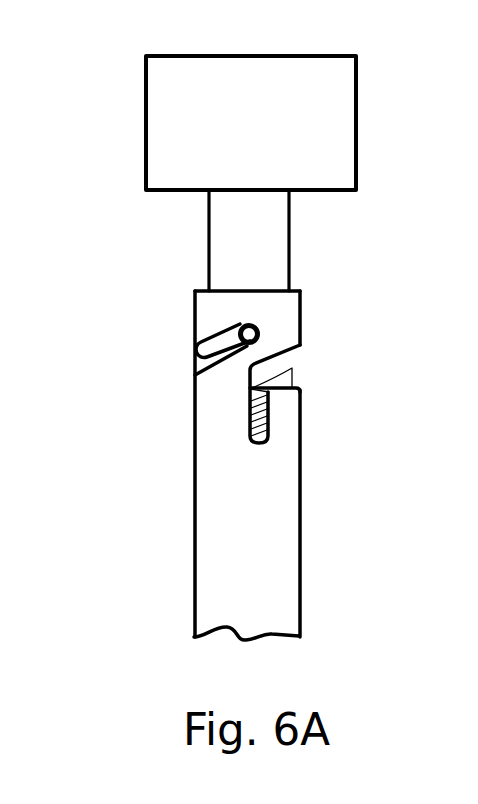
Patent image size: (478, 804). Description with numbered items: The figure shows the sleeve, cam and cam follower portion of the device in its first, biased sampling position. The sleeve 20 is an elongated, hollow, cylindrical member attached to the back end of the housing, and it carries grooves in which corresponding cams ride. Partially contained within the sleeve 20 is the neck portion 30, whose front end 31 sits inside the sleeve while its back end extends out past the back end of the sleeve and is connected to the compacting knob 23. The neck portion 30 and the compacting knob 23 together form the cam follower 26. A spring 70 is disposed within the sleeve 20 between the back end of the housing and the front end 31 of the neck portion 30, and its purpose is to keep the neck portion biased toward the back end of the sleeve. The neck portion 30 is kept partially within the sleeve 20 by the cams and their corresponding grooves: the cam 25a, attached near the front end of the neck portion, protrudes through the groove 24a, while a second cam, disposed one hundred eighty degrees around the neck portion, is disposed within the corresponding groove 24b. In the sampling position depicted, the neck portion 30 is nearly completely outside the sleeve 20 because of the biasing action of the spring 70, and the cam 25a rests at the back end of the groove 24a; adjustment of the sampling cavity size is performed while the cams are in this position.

The compacting knob 23 is at (183, 122).
The neck portion 30 is at (270, 227).
The cam follower 26 is at (186, 215).
The sleeve 20 is at (283, 520).
The groove 24a is at (212, 368).
The cam 25a is at (240, 327).
The groove 24b is at (275, 362).
The spring 70 is at (265, 413).
The front end of neck portion 31 is at (291, 372).